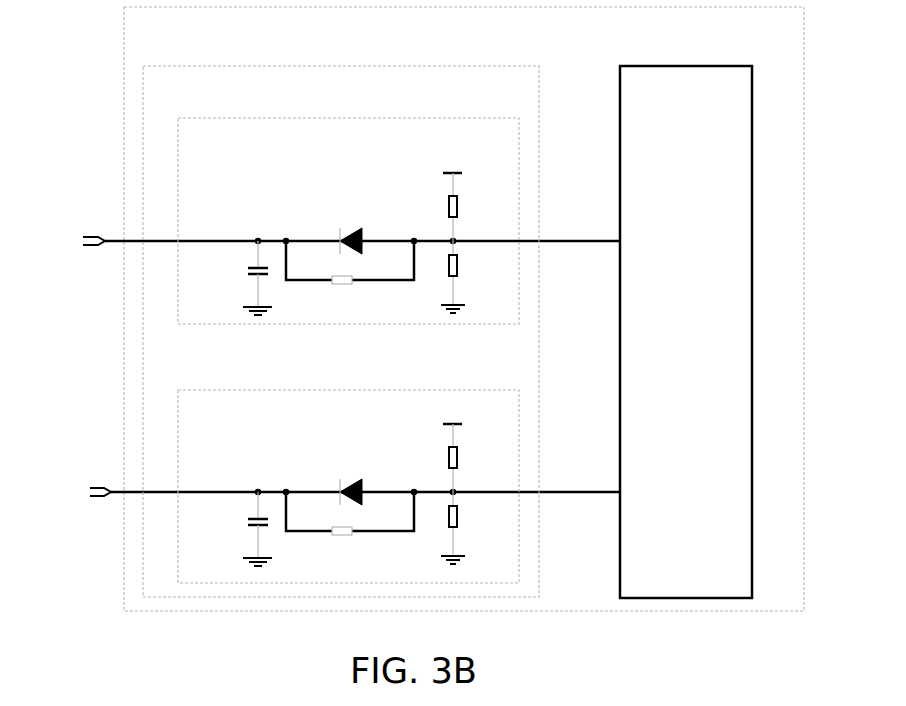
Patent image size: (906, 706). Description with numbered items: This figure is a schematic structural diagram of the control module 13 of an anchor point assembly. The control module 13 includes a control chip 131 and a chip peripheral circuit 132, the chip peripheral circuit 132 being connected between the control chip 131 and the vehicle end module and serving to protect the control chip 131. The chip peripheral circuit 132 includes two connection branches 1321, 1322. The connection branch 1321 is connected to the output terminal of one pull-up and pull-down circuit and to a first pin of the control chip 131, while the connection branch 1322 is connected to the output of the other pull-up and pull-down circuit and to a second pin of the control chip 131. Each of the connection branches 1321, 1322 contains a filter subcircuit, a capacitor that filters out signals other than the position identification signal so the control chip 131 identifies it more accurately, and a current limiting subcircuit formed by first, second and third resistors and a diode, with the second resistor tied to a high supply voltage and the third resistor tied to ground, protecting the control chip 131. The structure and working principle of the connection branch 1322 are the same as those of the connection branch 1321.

The control module 13 is at (123, 70).
The control chip 131 is at (683, 66).
The chip peripheral circuit 132 is at (340, 65).
The connection branch 1321 is at (340, 118).
The connection branch 1322 is at (350, 390).